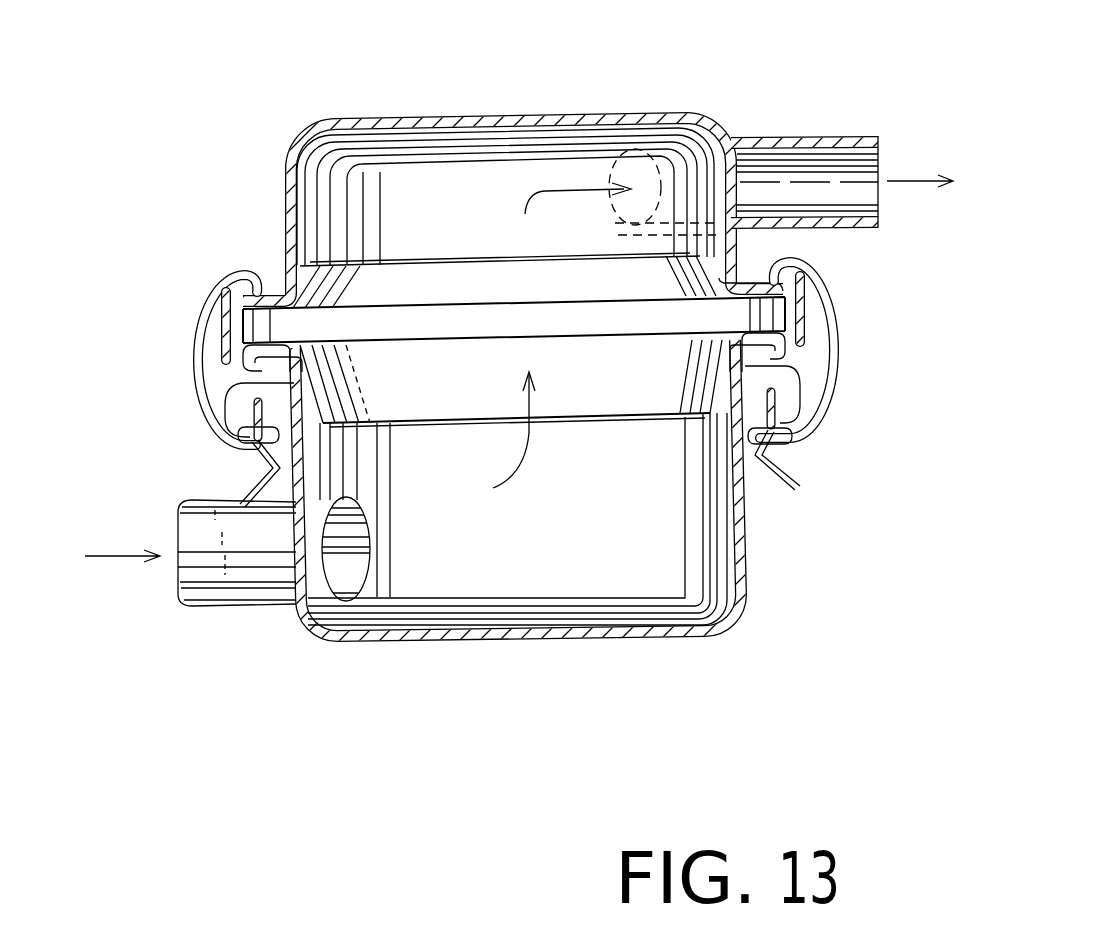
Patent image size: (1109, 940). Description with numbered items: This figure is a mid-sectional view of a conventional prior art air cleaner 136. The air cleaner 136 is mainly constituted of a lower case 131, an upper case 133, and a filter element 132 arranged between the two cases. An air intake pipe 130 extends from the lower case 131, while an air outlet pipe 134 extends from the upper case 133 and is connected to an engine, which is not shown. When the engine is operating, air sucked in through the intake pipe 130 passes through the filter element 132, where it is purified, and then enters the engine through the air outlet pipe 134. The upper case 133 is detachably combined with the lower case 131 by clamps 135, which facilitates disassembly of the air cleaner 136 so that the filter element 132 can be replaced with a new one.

The air intake pipe 130 is at (250, 608).
The lower case 131 is at (533, 640).
The filter element 132 is at (602, 420).
The upper case 133 is at (648, 113).
The air outlet pipe 134 is at (781, 137).
The clamps 135 is at (840, 358).
The air cleaner 136 is at (519, 382).